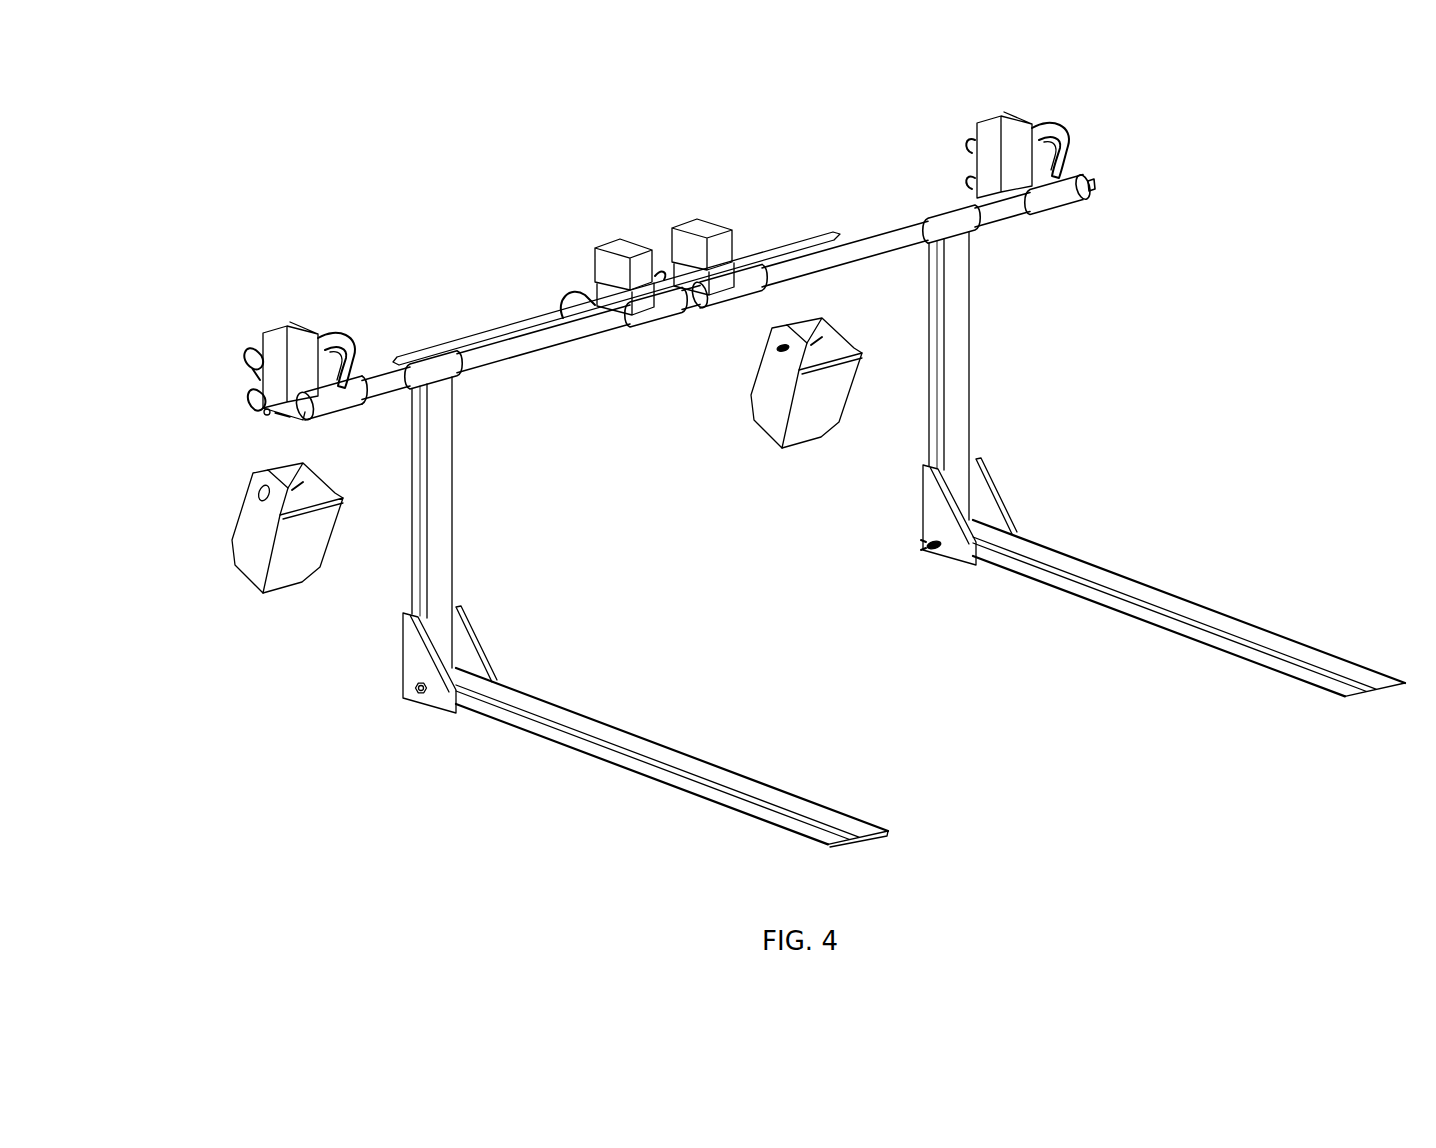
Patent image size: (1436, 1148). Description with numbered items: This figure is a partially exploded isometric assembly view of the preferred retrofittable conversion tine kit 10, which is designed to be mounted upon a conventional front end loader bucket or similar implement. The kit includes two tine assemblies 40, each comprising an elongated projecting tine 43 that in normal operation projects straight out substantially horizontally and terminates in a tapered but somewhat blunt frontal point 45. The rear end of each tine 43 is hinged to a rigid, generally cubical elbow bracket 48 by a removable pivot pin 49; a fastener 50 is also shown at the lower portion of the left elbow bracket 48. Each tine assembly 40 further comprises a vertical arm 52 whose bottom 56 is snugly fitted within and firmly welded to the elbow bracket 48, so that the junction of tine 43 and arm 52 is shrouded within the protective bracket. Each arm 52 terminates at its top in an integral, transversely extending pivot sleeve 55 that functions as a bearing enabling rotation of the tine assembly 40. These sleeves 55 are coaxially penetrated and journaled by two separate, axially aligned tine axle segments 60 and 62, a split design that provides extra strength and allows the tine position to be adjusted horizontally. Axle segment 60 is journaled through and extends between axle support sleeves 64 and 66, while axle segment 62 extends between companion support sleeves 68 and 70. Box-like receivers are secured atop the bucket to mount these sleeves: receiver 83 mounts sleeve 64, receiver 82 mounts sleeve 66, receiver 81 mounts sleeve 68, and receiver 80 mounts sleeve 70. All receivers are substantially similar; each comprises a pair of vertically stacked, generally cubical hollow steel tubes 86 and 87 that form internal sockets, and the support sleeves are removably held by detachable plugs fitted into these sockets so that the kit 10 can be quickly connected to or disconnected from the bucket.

The conversion kit 10 is at (485, 290).
The tine assembly 40 is at (498, 622).
The projecting tine 43 is at (640, 745).
The frontal point 45 is at (876, 842).
The elbow bracket 48 is at (418, 665).
The pivot pin 49 is at (932, 549).
The bolt 50 is at (415, 695).
The vertical arm 52 is at (440, 487).
The pivot sleeve 55 is at (448, 368).
The bottom of vertical arm 56 is at (962, 473).
The tine axle segment 60 is at (583, 335).
The tine axle segment 62 is at (822, 260).
The axle support sleeve 64 is at (355, 395).
The axle support sleeve 66 is at (663, 305).
The support sleeve 68 is at (745, 280).
The support sleeve 70 is at (1062, 196).
The receiver 80 is at (1010, 135).
The receiver 81 is at (692, 227).
The receiver 82 is at (610, 247).
The receiver 83 is at (297, 325).
The hollow steel tube 86 is at (255, 358).
The hollow steel tube 87 is at (270, 406).